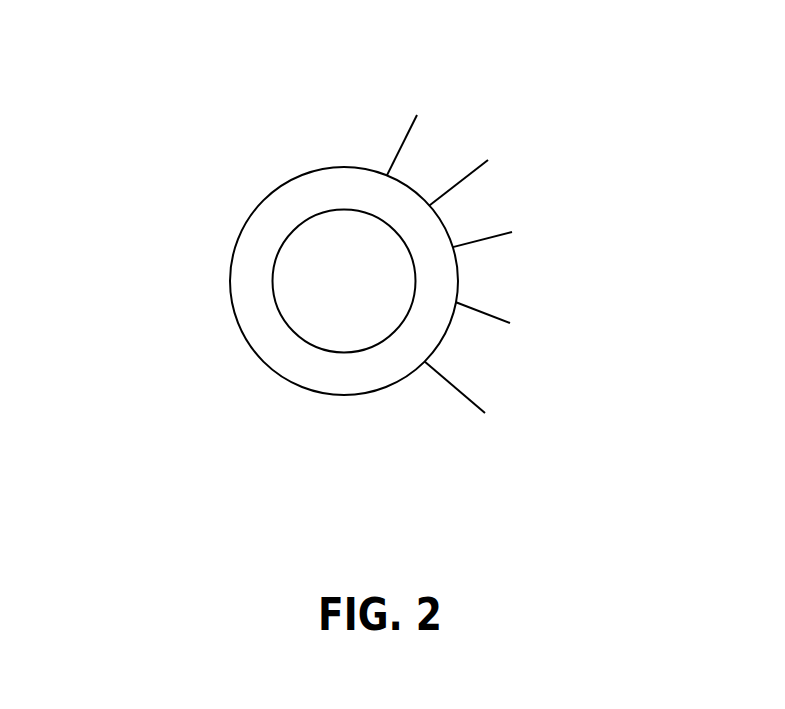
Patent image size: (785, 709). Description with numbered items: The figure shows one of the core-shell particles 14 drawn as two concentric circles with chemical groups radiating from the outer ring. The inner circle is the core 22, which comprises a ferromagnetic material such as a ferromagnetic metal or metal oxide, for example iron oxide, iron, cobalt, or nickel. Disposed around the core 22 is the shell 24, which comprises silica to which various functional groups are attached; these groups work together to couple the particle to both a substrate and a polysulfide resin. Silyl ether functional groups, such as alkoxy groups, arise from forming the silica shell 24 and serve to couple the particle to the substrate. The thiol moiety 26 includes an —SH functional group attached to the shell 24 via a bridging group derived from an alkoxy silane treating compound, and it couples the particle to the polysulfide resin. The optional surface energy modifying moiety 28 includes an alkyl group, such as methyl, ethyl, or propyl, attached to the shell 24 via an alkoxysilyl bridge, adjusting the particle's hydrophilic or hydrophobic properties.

The core-shell particles 14 is at (140, 121).
The core 22 is at (344, 281).
The shell 24 is at (363, 173).
The thiol moiety 26 is at (635, 184).
The surface energy modifying moiety 28 is at (555, 110).